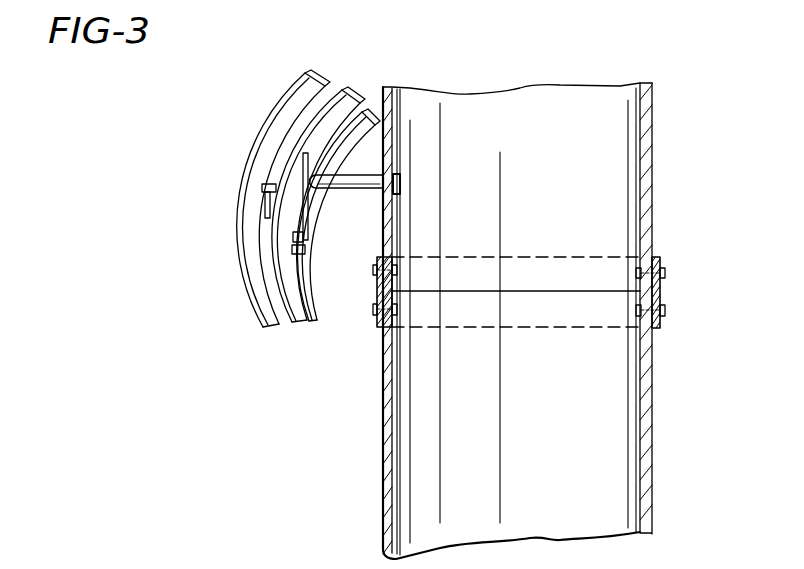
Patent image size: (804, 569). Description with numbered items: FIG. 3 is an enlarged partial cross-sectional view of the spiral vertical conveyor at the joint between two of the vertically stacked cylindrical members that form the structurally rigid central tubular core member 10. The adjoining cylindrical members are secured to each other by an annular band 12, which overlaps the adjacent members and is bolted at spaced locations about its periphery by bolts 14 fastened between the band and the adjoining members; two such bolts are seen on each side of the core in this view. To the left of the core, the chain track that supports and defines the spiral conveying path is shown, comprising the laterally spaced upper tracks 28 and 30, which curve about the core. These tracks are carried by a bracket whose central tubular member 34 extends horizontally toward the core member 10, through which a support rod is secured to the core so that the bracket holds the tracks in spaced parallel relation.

The central tubular core member 10 is at (383, 370).
The annular band 12 is at (660, 290).
The bolts 14 is at (666, 273).
The upper track 28 is at (303, 157).
The upper track 30 is at (288, 95).
The central tubular member 34 is at (357, 190).